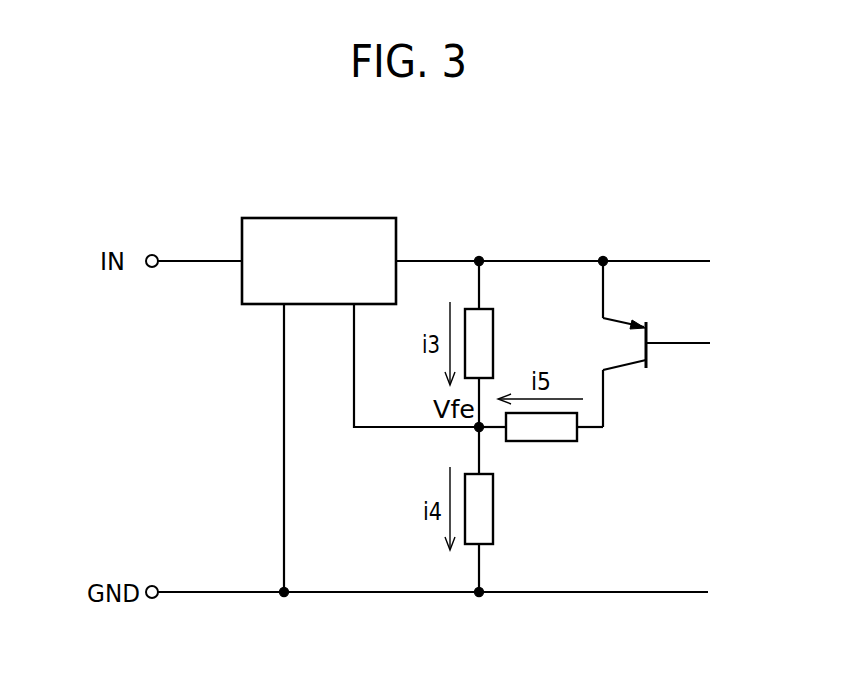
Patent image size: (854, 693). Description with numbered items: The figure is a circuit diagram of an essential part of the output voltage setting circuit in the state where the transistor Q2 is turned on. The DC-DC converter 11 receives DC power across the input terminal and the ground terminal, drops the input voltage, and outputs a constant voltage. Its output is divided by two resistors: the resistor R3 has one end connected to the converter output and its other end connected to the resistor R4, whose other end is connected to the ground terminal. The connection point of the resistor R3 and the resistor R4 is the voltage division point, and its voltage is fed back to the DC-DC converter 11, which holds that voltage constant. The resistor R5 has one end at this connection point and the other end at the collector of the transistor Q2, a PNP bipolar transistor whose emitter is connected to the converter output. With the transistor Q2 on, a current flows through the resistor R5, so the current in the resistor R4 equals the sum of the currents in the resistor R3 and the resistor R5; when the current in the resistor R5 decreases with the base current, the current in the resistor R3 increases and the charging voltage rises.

The DC-DC converter 11 is at (367, 218).
The resistor R3 is at (496, 344).
The resistor R4 is at (496, 509).
The resistor R5 is at (541, 443).
The transistor Q2 is at (655, 344).